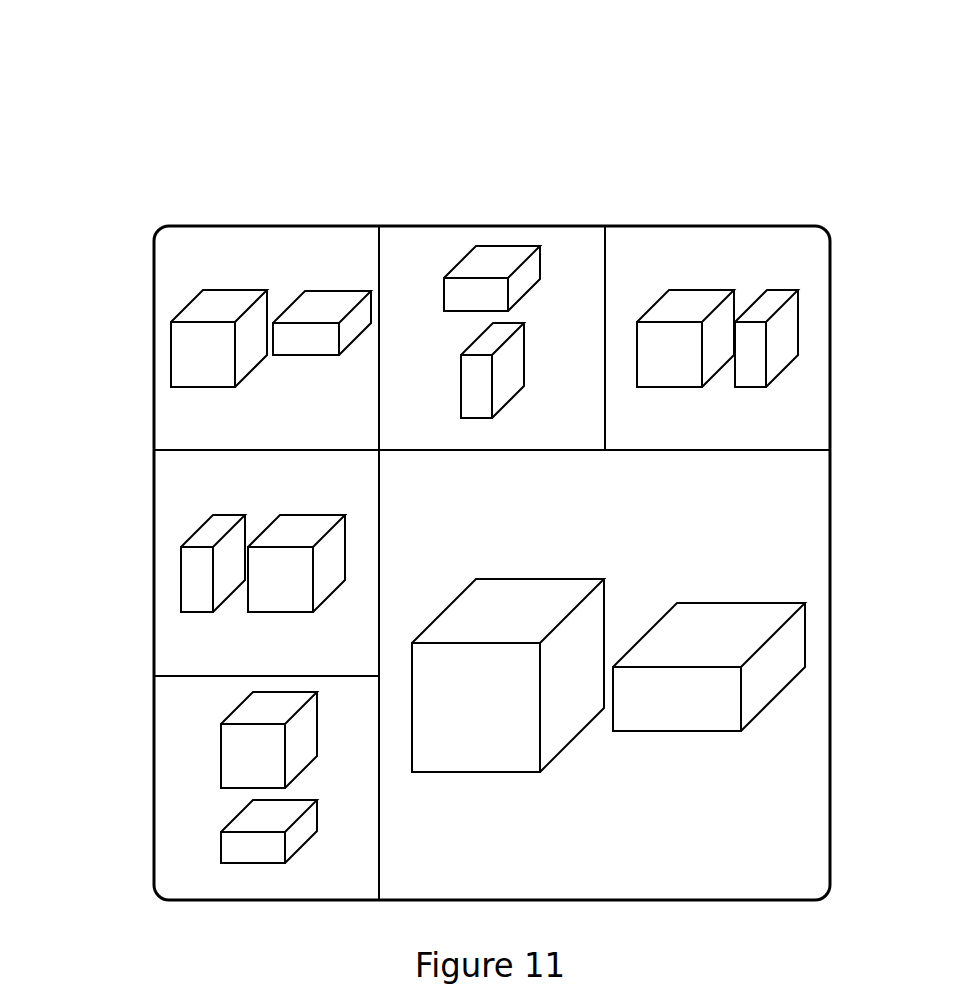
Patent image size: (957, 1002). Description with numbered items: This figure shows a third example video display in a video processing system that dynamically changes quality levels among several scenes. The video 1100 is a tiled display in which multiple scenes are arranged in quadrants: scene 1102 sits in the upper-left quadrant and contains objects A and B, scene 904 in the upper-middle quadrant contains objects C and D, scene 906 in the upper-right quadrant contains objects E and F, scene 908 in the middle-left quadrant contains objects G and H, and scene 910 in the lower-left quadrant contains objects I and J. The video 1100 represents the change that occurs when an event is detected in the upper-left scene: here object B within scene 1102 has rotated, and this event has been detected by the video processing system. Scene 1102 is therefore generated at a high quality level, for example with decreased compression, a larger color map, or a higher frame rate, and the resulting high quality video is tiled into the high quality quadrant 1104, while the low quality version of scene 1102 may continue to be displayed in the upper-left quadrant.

The video 1100 is at (493, 78).
The scene 1102 is at (269, 226).
The scene 904 is at (494, 226).
The scene 906 is at (719, 226).
The scene 908 is at (167, 468).
The scene 910 is at (167, 674).
The high quality quadrant 1104 is at (636, 819).